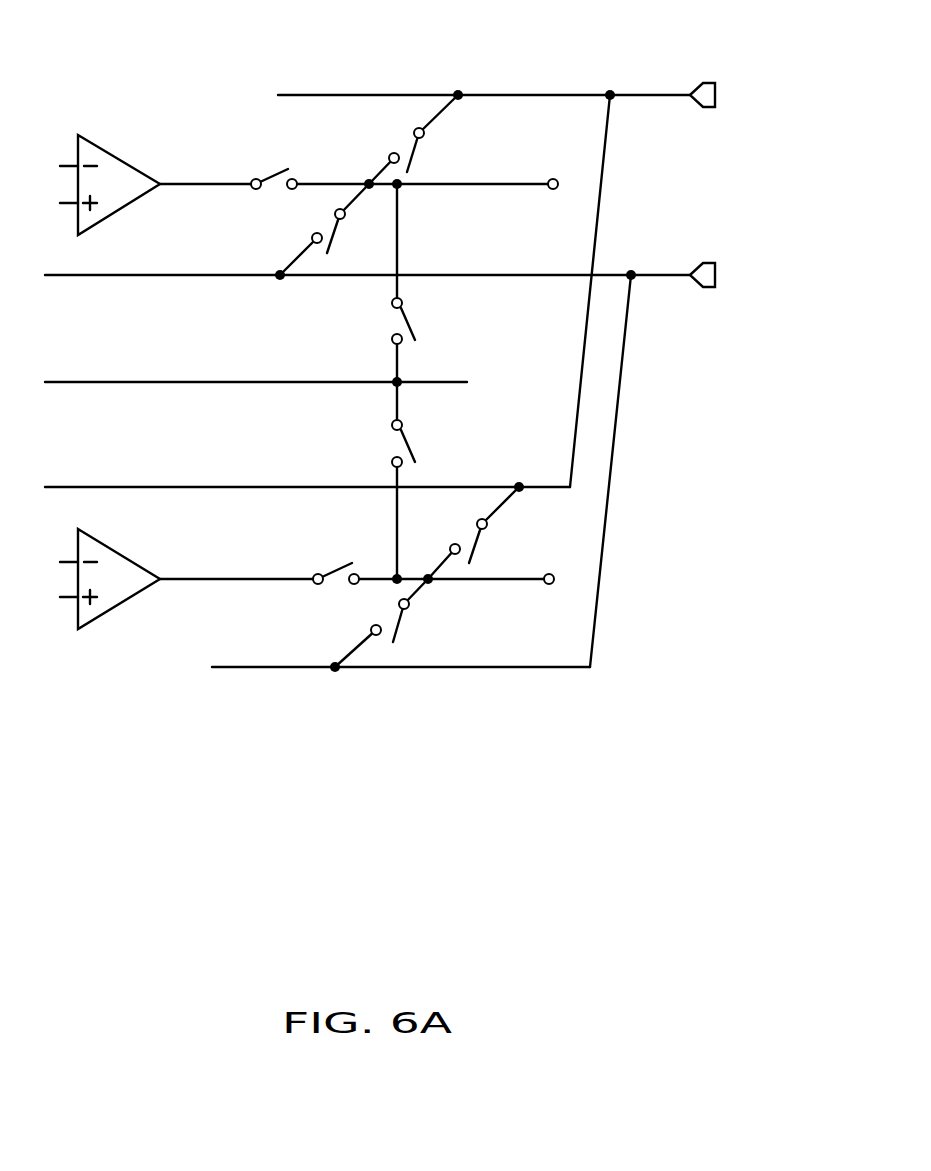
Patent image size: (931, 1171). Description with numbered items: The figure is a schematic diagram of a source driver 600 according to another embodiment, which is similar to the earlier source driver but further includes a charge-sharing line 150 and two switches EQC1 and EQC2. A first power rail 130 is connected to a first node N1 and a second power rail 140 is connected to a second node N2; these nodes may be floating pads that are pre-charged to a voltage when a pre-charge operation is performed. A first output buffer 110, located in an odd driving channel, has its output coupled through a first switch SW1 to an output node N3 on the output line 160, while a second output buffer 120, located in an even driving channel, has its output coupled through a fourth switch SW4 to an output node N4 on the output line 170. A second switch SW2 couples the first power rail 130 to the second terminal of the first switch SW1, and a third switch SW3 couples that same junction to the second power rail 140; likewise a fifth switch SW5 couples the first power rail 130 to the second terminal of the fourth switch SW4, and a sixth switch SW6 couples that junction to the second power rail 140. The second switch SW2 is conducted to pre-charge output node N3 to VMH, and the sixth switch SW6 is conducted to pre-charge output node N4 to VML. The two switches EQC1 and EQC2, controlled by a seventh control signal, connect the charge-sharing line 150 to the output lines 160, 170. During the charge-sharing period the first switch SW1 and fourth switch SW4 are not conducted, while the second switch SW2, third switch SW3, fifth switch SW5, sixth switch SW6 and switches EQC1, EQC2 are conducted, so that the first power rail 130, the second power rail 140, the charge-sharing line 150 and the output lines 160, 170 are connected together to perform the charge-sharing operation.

The first output buffer 110 is at (120, 153).
The second output buffer 120 is at (110, 542).
The first power rail 130 is at (327, 95).
The second power rail 140 is at (458, 667).
The charge-sharing line 150 is at (167, 382).
The output line 160 is at (467, 184).
The output line 170 is at (478, 579).
The source driver 600 is at (643, 646).
The first node N1 is at (708, 82).
The second node N2 is at (708, 262).
The output node N3 is at (553, 178).
The output node N4 is at (549, 573).
The first switch SW1 is at (274, 157).
The second switch SW2 is at (413, 137).
The third switch SW3 is at (317, 232).
The fourth switch SW4 is at (334, 554).
The fifth switch SW5 is at (466, 530).
The sixth switch SW6 is at (378, 625).
The switch EQC1 is at (436, 321).
The switch EQC2 is at (437, 441).